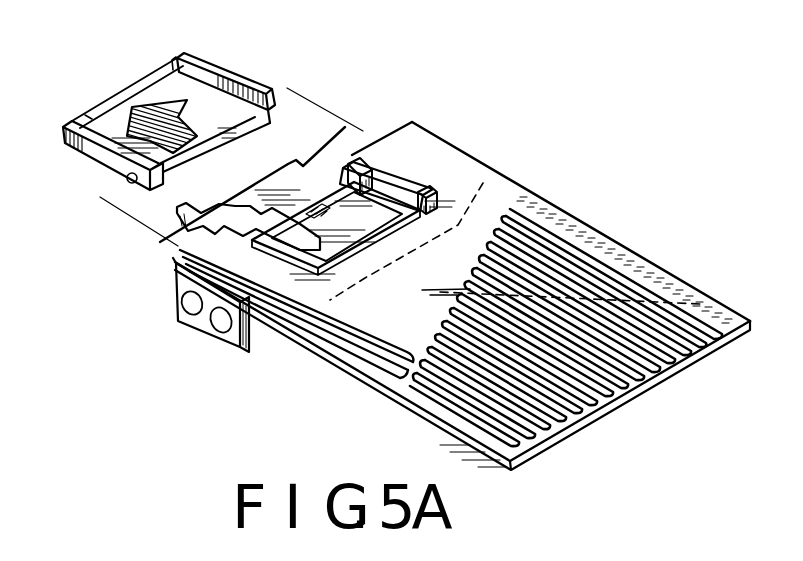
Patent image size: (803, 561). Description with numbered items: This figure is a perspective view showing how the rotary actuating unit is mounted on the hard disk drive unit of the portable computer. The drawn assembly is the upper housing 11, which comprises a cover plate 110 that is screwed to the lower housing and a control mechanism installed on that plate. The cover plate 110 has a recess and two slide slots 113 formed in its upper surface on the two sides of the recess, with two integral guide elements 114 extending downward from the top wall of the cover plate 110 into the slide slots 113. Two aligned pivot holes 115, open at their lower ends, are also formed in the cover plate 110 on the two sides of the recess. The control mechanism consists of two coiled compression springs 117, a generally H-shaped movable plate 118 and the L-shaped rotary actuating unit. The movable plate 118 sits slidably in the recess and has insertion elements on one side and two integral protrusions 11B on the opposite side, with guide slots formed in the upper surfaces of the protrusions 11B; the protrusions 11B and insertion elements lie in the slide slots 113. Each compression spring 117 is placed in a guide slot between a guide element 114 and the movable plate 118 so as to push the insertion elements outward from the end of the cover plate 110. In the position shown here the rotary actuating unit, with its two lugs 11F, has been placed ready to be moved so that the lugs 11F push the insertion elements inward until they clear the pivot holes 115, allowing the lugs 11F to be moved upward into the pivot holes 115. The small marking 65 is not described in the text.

The upper housing 11 is at (590, 185).
The cover plate 110 is at (593, 240).
The slide slots 113 is at (383, 200).
The guide elements 114 is at (496, 172).
The pivot holes 115 is at (367, 160).
The coiled compression springs 117 is at (440, 188).
The movable plate 118 is at (303, 165).
The protrusions 11B is at (405, 170).
The lugs 11F is at (124, 176).
The marking 65 is at (442, 225).